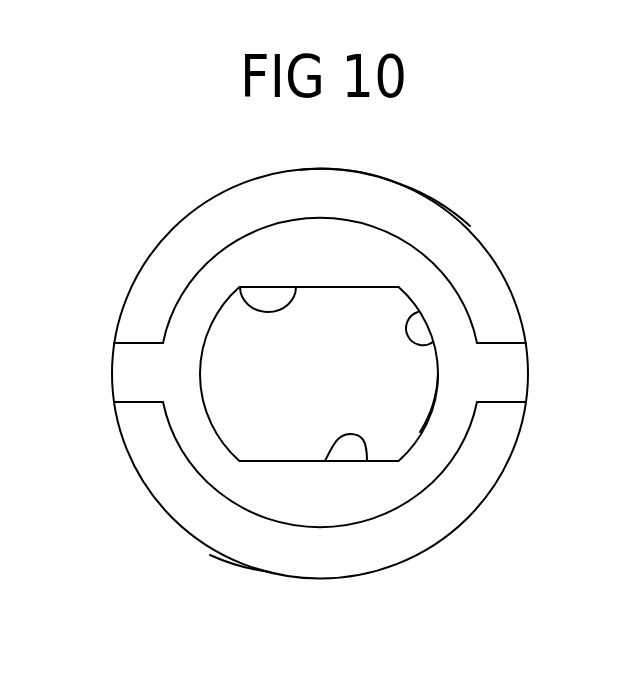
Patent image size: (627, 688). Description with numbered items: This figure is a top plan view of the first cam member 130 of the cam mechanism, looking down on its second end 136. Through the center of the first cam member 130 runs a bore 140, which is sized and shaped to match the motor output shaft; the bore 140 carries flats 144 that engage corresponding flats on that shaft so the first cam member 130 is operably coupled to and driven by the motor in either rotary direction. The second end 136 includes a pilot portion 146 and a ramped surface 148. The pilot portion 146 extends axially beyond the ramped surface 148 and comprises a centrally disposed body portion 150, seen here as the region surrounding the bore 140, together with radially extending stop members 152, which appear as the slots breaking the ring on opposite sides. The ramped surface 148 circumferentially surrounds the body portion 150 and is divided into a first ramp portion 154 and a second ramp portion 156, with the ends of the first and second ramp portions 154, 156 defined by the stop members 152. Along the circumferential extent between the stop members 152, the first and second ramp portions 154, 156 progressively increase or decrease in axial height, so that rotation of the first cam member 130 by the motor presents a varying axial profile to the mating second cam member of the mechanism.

The first cam member 130 is at (179, 183).
The second end 136 is at (367, 188).
The first ramp portion 154 is at (430, 214).
The second ramp portion 156 is at (253, 545).
The ramped surface 148 is at (185, 497).
The stop members 152 is at (133, 383).
The body portion 150 is at (330, 495).
The pilot portion 146 is at (443, 430).
The bore 140 is at (433, 341).
The flats 144 is at (239, 288).